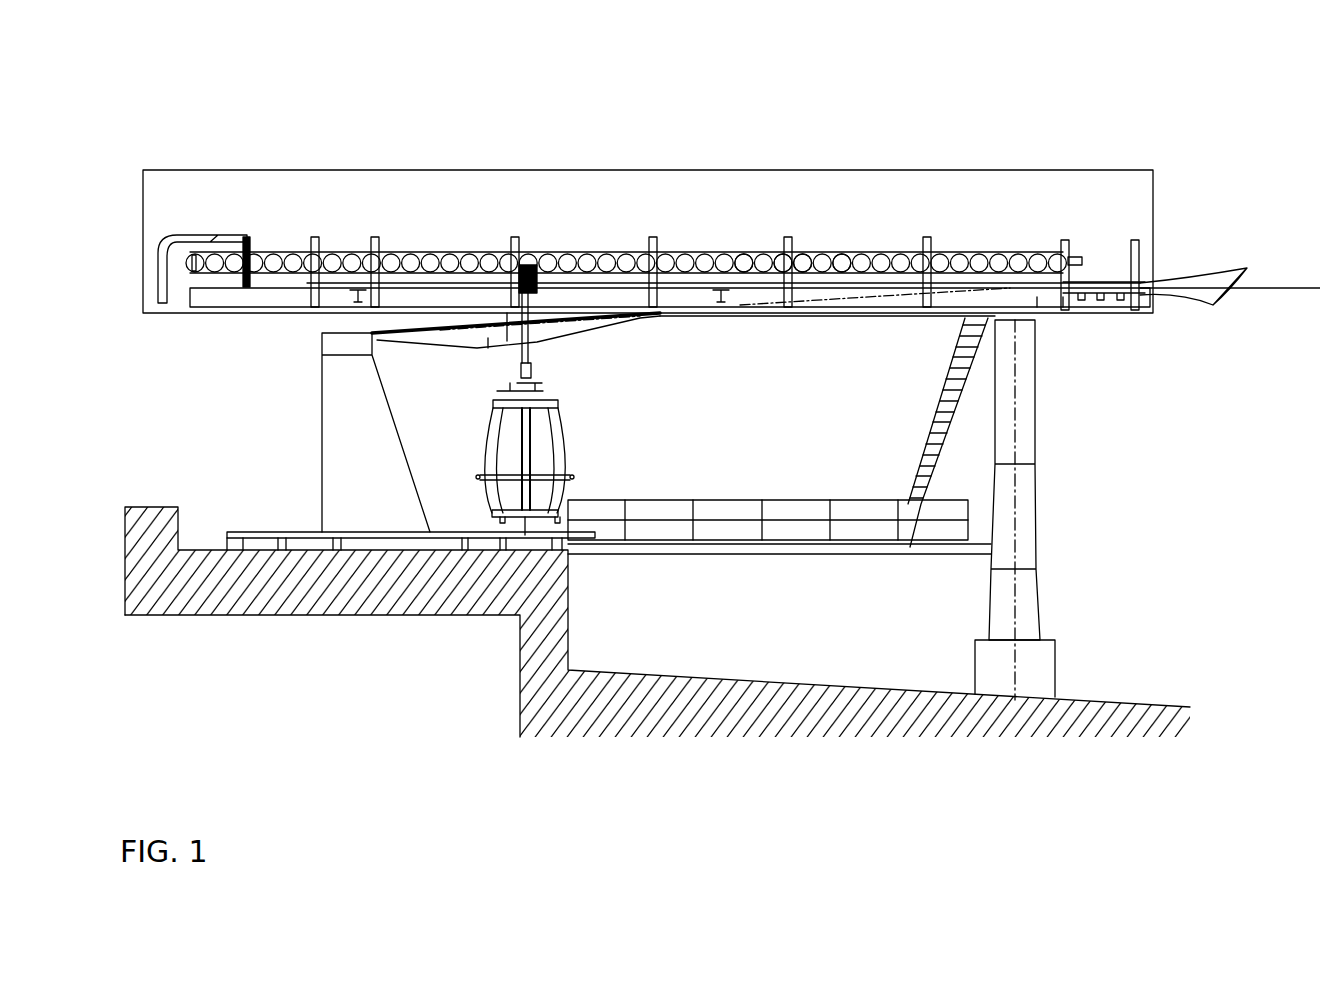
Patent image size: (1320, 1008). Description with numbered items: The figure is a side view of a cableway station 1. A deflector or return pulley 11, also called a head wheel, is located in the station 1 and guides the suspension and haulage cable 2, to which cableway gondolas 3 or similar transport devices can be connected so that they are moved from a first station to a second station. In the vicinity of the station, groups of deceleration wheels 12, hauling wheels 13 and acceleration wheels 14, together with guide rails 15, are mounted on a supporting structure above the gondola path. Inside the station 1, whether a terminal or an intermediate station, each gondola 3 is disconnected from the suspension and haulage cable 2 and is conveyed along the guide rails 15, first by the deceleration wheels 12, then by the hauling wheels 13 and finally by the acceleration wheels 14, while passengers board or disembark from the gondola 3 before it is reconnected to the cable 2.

The station 1 is at (343, 698).
The suspension and haulage cable 2 is at (1288, 287).
The cableway gondola 3 is at (570, 444).
The return pulley 11 is at (597, 327).
The deceleration wheels 12 is at (773, 254).
The hauling wheels 13 is at (303, 256).
The acceleration wheels 14 is at (835, 254).
The guide rails 15 is at (345, 283).